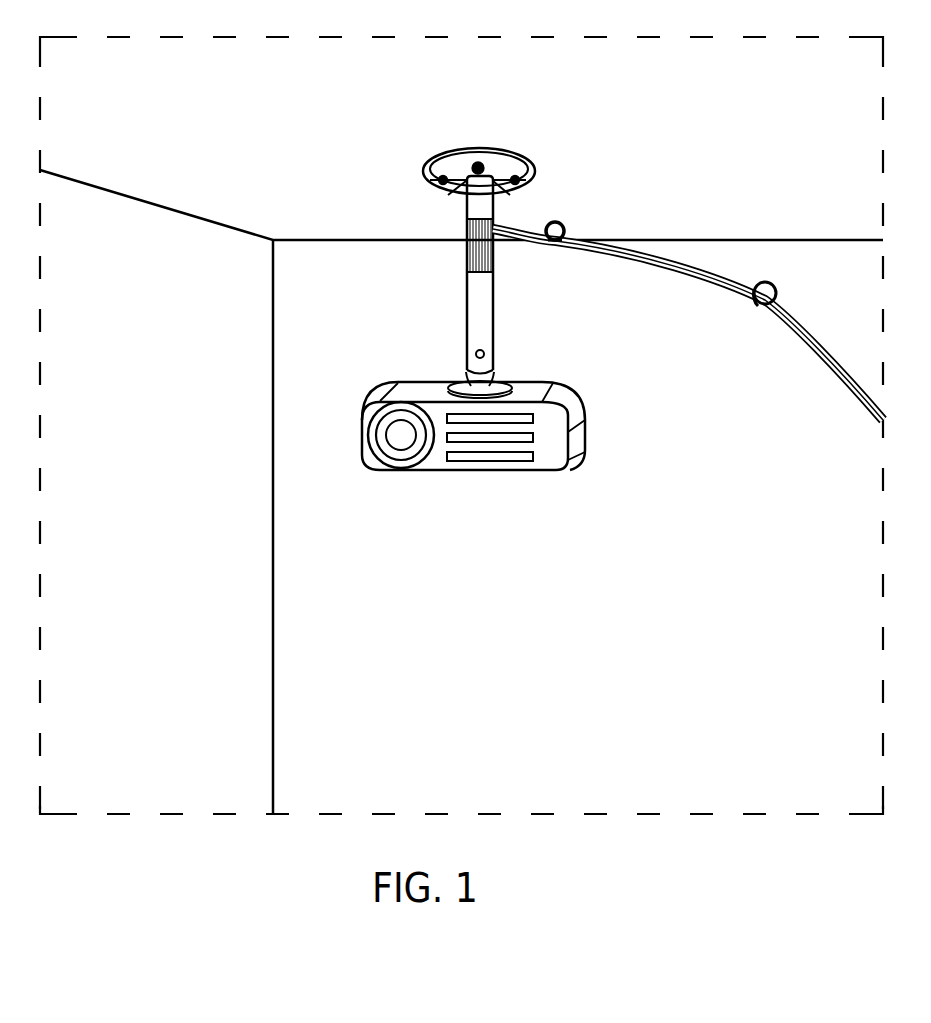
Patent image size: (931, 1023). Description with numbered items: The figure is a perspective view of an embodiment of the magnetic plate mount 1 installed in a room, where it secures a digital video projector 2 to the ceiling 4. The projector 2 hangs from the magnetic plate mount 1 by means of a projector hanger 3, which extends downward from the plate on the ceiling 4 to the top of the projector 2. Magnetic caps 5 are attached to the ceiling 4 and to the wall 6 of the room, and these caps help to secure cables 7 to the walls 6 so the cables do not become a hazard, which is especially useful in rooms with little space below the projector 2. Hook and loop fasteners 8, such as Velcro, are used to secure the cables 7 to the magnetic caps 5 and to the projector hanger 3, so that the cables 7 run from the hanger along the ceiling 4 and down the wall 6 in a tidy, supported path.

The magnetic plate mount 1 is at (493, 339).
The digital video projector 2 is at (487, 470).
The projector hanger 3 is at (467, 303).
The ceiling 4 is at (359, 180).
The magnetic caps 5 is at (776, 289).
The wall 6 is at (688, 336).
The cables 7 is at (642, 258).
The hook and loop fasteners 8 is at (558, 243).